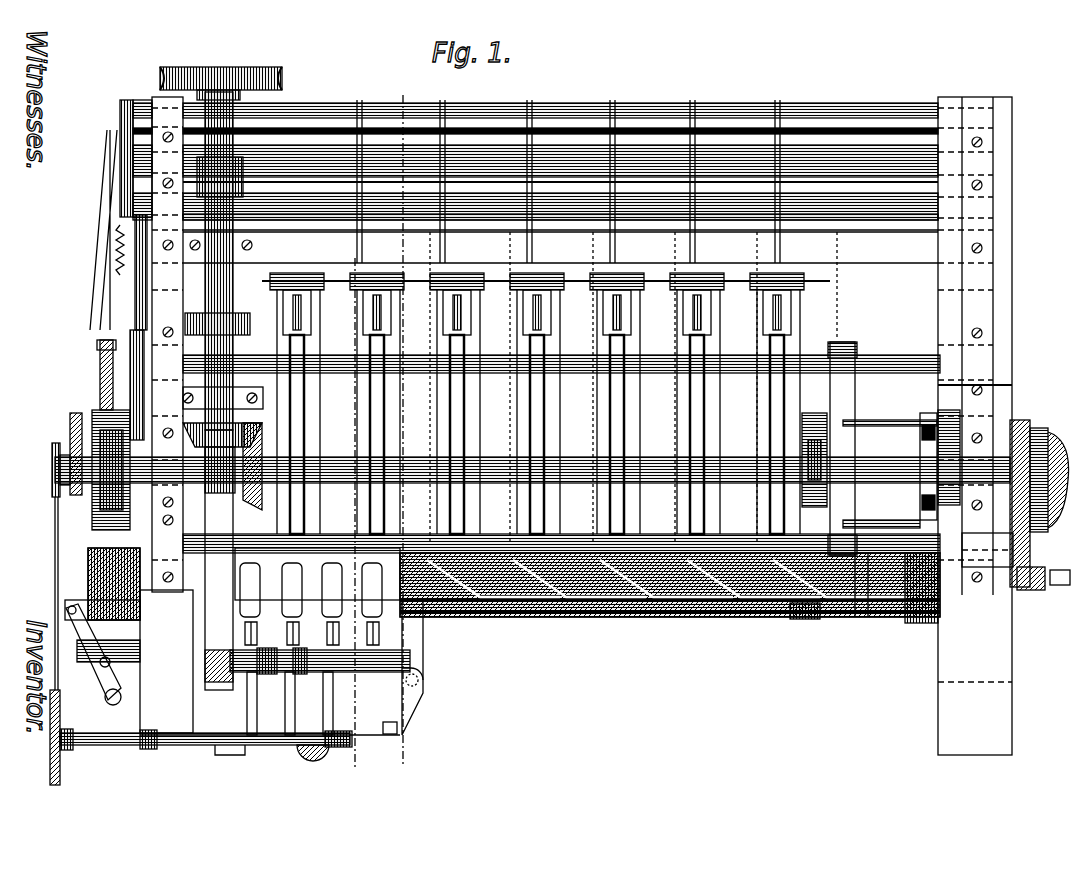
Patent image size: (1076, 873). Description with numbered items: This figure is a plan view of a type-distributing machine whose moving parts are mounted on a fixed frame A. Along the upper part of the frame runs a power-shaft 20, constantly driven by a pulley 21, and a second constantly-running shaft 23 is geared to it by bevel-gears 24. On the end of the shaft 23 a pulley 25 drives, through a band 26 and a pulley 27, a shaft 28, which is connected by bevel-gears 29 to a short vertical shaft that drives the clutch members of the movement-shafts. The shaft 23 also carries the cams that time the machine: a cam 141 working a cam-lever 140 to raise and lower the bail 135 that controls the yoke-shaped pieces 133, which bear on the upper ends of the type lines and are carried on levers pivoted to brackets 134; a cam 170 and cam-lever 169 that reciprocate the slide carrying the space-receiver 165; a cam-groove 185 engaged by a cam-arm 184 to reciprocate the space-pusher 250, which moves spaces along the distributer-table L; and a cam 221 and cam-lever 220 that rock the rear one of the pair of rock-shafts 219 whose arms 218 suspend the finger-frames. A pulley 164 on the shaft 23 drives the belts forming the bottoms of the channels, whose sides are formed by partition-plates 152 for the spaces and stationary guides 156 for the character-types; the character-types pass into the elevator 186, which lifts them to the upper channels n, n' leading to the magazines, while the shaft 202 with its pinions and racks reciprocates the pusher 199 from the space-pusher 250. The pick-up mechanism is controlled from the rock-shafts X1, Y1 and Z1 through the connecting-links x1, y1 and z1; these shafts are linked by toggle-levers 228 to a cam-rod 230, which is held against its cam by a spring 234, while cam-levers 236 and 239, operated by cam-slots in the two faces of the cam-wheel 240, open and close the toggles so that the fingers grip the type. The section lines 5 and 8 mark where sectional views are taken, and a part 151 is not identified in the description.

The pulley 21 is at (221, 70).
The power-shaft 20 is at (228, 115).
The section line 5 is at (406, 93).
The section line 8 is at (358, 258).
The link z1 is at (458, 223).
The rock-shaft Z1 is at (487, 203).
The rock-shaft Y1 is at (557, 177).
The link y1 is at (553, 182).
The rock-shaft X1 is at (605, 125).
The connecting-link x1 is at (665, 130).
The toggle-levers 228 is at (125, 117).
The spring 234 is at (115, 255).
The cam-rod 230 is at (110, 285).
The cam-lever 239 is at (140, 297).
The cam-lever 236 is at (90, 348).
The pulley 164 is at (72, 447).
The pulley 25 is at (55, 457).
The cam-wheel 240 is at (93, 512).
The band 26 is at (33, 641).
The bevel-gears 24 is at (258, 440).
The cam 141 is at (207, 480).
The cam-lever 140 is at (205, 522).
The pulley 27 is at (60, 712).
The shaft 28 is at (103, 742).
The bevel-gears 29 is at (311, 750).
The yoke-shaped piece 133 is at (385, 632).
The bail 135 is at (383, 648).
The bracket 134 is at (383, 728).
The stationary guide 156 is at (513, 622).
The partition-plate 152 is at (557, 617).
The tray 151 is at (612, 618).
The arm 218 is at (627, 323).
The rock-shaft 219 is at (632, 352).
The distributer-table L is at (818, 312).
The frame A is at (180, 723).
The cam-lever 220 is at (953, 387).
The cam 221 is at (950, 433).
The cam-lever 169 is at (827, 420).
The pusher 199 is at (883, 418).
The shaft 202 is at (920, 450).
The shaft 23 is at (900, 458).
The cam-groove 185 is at (1000, 478).
The space-pusher 250 is at (893, 520).
The cam 170 is at (816, 470).
The cam-arm 184 is at (1040, 545).
The receptacle 165 is at (823, 612).
The channel n is at (859, 597).
The channel n' is at (877, 592).
The elevator 186 is at (913, 607).